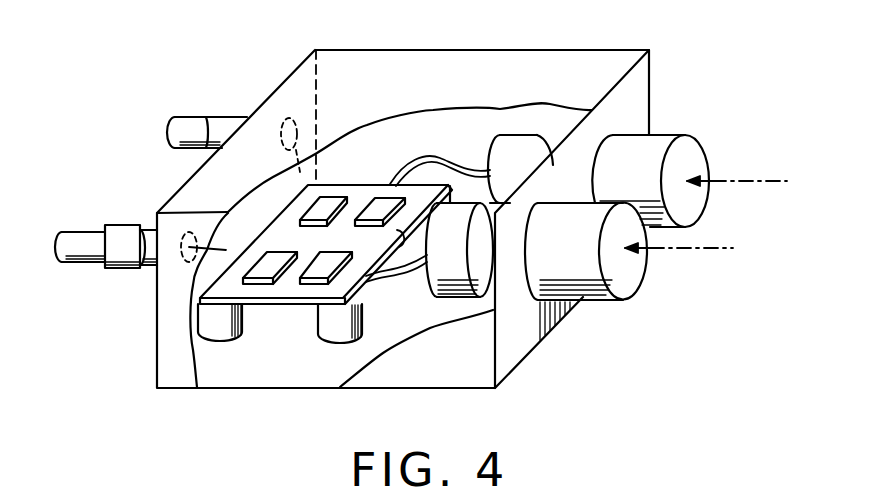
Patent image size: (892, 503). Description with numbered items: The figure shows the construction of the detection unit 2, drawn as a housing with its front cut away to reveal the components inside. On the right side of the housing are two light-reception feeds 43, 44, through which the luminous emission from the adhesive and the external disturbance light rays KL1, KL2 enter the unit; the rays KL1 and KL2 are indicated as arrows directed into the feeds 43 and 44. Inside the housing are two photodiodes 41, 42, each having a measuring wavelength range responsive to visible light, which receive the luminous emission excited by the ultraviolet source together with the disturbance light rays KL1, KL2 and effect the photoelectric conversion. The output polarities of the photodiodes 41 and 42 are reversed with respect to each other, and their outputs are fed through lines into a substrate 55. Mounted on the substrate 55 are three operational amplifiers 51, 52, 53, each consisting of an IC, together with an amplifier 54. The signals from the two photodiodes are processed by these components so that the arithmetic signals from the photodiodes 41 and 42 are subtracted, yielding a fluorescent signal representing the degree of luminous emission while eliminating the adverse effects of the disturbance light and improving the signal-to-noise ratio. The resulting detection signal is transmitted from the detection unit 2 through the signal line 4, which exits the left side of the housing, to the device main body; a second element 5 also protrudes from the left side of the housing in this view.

The detection unit 2 is at (473, 58).
The signal line 4 is at (80, 266).
The light emitting element 5 is at (220, 117).
The photodiode 41 is at (517, 142).
The photodiode 42 is at (444, 297).
The light-reception feed 43 is at (660, 133).
The light-reception feed 44 is at (592, 300).
The operational amplifier 51 is at (375, 193).
The operational amplifier 52 is at (310, 282).
The operational amplifier 53 is at (330, 200).
The amplifier 54 is at (257, 282).
The substrate 55 is at (368, 288).
The external disturbance light ray KL1 is at (718, 177).
The external disturbance light ray KL2 is at (668, 250).